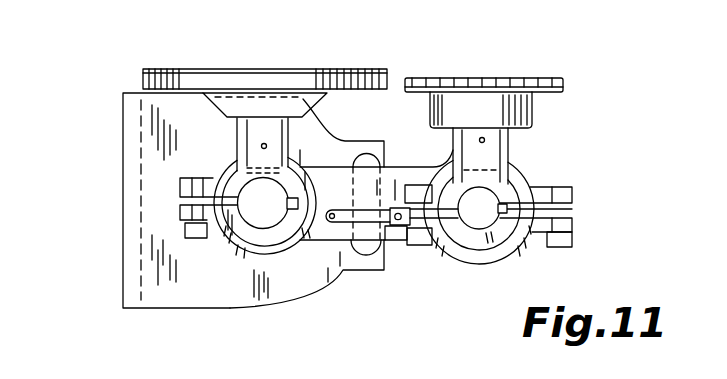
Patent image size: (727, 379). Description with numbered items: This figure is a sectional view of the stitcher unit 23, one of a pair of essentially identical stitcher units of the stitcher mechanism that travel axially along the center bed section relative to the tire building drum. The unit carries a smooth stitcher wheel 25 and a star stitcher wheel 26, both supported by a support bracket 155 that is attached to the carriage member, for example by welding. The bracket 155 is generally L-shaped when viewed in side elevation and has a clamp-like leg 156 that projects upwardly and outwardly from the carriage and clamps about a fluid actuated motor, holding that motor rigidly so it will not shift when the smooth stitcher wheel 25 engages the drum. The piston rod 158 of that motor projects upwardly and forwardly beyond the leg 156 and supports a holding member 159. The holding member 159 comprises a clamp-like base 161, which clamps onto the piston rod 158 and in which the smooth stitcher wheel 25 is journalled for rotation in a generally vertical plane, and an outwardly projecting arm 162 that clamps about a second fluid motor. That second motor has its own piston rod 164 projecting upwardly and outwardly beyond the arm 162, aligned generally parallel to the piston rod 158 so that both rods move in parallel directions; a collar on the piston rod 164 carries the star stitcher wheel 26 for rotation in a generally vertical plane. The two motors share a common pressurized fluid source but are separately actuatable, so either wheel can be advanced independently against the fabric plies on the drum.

The stitcher unit 23 is at (98, 108).
The smooth stitcher wheel 25 is at (356, 40).
The star stitcher wheel 26 is at (556, 44).
The support bracket 155 is at (118, 260).
The clamp-like leg 156 is at (318, 275).
The piston rod 158 is at (268, 223).
The holding member 159 is at (245, 262).
The clamp-like base 161 is at (243, 240).
The outwardly projecting arm 162 is at (524, 170).
The piston rod 164 is at (480, 216).